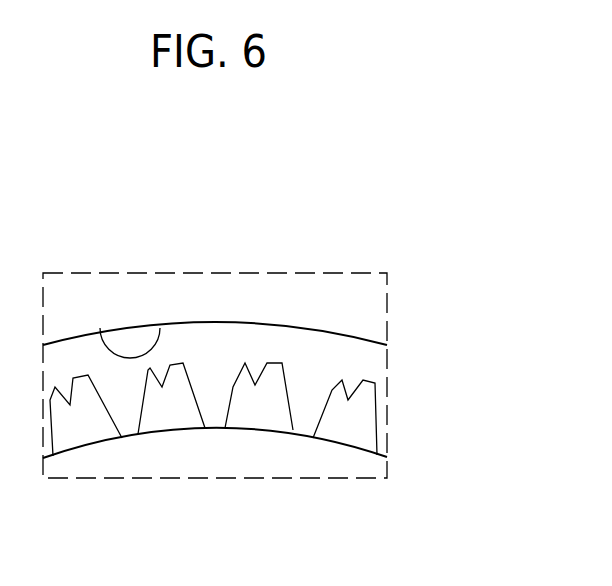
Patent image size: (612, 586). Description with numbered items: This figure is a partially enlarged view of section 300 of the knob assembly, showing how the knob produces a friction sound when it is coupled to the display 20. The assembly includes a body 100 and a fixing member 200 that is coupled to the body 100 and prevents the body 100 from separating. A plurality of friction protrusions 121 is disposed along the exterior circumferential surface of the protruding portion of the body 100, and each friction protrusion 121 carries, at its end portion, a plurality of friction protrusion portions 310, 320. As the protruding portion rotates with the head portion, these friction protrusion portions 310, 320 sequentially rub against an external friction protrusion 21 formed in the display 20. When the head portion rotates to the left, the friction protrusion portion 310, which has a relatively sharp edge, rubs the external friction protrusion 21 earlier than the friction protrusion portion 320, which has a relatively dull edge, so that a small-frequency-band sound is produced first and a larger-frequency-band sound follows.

The section 300 is at (335, 252).
The display 20 is at (348, 312).
The external friction protrusion 21 is at (142, 342).
The body 100 is at (270, 457).
The fixing member 200 is at (377, 362).
The friction protrusion portion 310 is at (246, 374).
The friction protrusion 121 is at (255, 405).
The friction protrusion portion 320 is at (277, 375).